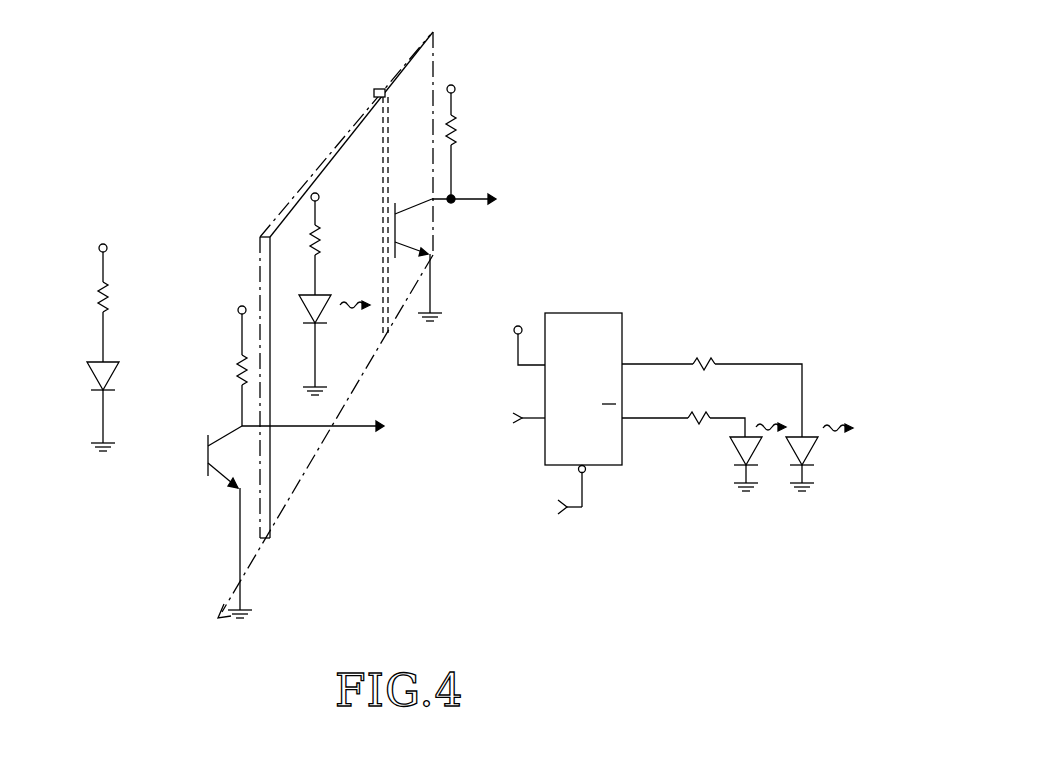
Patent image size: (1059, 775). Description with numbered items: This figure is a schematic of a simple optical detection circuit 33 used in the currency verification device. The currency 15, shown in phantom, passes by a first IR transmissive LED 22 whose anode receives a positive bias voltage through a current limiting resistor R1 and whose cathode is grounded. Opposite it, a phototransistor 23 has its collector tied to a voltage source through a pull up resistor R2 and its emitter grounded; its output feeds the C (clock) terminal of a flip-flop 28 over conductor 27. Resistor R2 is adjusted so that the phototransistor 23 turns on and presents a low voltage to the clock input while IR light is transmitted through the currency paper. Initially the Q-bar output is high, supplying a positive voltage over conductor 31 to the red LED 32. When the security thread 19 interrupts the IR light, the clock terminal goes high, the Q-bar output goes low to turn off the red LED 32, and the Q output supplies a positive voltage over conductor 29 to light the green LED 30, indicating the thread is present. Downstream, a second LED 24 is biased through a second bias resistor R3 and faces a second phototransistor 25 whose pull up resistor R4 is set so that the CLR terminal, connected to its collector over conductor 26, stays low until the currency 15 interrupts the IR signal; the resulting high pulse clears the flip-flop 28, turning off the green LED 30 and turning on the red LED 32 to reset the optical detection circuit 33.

The currency 15 is at (291, 499).
The security thread 19 is at (379, 90).
The first IR transmissive LED 22 is at (323, 294).
The phototransistor 23 is at (416, 202).
The second LED 24 is at (118, 362).
The second phototransistor 25 is at (207, 466).
The conductor 26 is at (297, 424).
The conductor 27 is at (470, 196).
The flip-flop 28 is at (666, 523).
The conductor 29 is at (647, 364).
The green LED 30 is at (812, 430).
The conductor 31 is at (648, 419).
The red LED 32 is at (748, 436).
The optical detection circuit 33 is at (721, 603).
The current limiting resistor R1 is at (320, 238).
The pull up resistor R2 is at (457, 126).
The second bias resistor R3 is at (110, 291).
The pull up resistor R4 is at (240, 371).